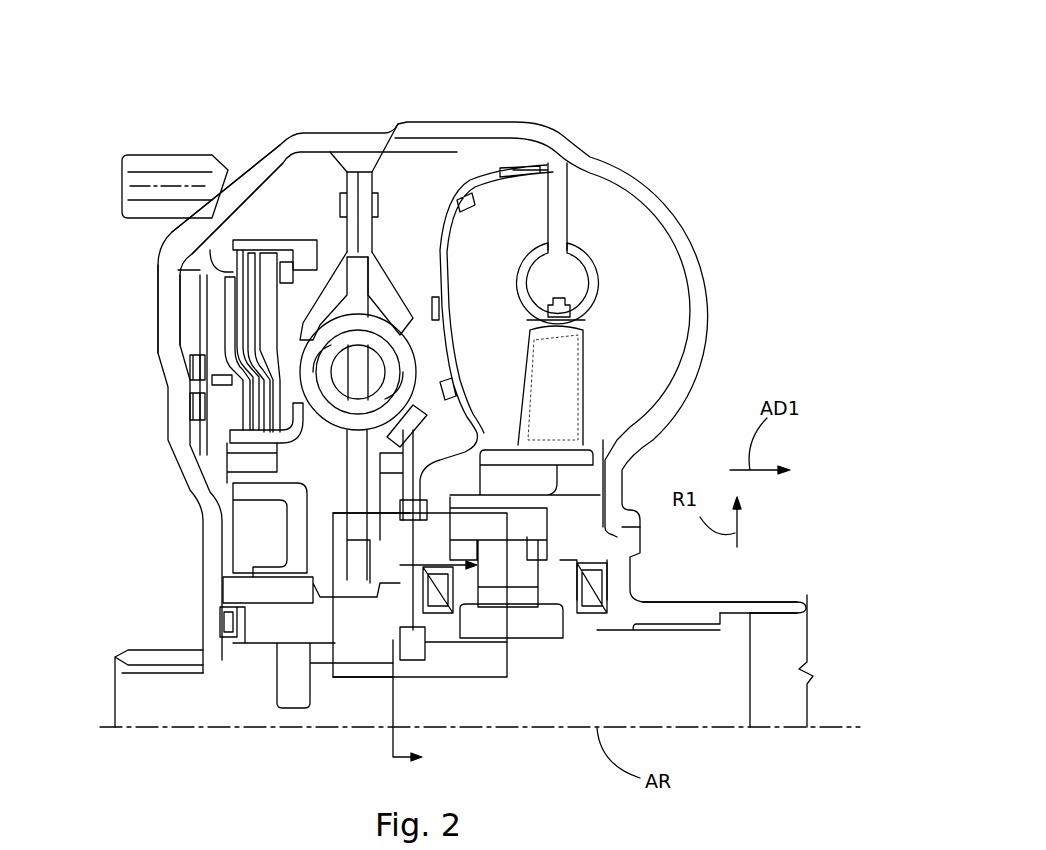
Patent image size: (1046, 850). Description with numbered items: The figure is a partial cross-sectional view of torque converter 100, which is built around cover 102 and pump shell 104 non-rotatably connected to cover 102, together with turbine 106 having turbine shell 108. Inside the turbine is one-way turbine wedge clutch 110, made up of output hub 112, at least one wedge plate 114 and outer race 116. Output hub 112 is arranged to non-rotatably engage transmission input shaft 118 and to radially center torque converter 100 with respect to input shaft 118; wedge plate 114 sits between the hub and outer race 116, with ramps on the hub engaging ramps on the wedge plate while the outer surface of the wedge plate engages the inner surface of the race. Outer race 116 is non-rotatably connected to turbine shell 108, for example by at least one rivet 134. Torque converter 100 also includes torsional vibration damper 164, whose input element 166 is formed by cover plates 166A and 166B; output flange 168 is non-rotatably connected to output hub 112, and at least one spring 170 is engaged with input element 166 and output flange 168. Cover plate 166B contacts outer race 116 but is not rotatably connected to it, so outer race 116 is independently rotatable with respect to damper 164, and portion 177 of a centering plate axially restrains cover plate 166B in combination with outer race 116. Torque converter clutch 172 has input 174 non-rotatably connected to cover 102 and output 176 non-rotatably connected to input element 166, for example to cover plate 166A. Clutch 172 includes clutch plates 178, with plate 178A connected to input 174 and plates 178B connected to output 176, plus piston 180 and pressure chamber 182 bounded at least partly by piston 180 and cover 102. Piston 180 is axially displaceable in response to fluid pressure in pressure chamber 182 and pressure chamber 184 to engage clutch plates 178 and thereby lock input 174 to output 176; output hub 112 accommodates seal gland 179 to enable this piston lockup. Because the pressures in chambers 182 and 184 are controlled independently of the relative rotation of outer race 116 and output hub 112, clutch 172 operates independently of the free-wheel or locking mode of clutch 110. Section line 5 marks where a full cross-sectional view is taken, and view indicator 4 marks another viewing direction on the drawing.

The torque converter 100 is at (645, 140).
The cover 102 is at (253, 160).
The pump shell 104 is at (550, 133).
The turbine 106 is at (523, 191).
The turbine shell 108 is at (482, 197).
The one-way turbine wedge clutch 110 is at (432, 544).
The output hub 112 is at (287, 623).
The wedge plate 114 is at (410, 590).
The outer race 116 is at (402, 557).
The transmission input shaft 118 is at (803, 596).
The rivet 134 is at (398, 505).
The torsional vibration damper 164 is at (323, 222).
The input element 166 is at (357, 163).
The cover plate 166A is at (350, 180).
The cover plate 166B is at (370, 178).
The output flange 168 is at (350, 477).
The spring 170 is at (300, 362).
The torque converter clutch 172 is at (207, 247).
The input 174 is at (185, 282).
The output 176 is at (250, 403).
The portion of centering plate 177 is at (345, 460).
The clutch plate 178 is at (243, 249).
The clutch plate 178A is at (265, 245).
The clutch plates 178B is at (250, 380).
The seal gland 179 is at (240, 600).
The piston 180 is at (215, 307).
The pressure chamber 182 is at (190, 350).
The pressure chamber 184 is at (275, 143).
The section view 4 is at (445, 678).
The section line 5- 5 is at (447, 663).